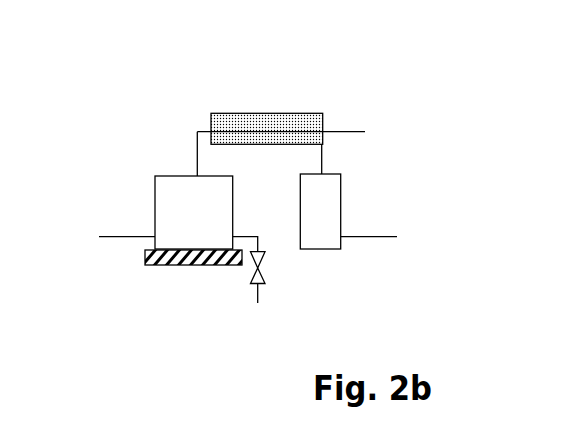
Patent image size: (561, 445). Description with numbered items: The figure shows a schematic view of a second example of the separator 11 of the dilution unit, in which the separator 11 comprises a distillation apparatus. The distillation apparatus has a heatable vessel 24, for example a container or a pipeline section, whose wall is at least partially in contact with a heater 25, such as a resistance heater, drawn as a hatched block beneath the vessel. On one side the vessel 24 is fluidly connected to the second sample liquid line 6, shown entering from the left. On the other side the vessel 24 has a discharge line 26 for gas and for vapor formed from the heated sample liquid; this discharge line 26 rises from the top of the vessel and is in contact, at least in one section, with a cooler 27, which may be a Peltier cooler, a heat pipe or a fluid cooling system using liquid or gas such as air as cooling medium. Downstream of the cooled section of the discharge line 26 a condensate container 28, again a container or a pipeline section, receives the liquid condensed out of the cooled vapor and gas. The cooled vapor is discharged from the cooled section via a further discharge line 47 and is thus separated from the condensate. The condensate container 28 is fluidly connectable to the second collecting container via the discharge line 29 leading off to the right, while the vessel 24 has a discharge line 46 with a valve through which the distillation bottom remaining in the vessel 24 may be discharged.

The separator 11 is at (158, 109).
The cooler 27 is at (260, 113).
The discharge line 47 is at (333, 131).
The discharge line 26 is at (197, 163).
The heatable vessel 24 is at (167, 212).
The heater 25 is at (200, 263).
The condensate container 28 is at (328, 195).
The discharge line 29 is at (363, 238).
The second sample liquid line 6 is at (119, 237).
The discharge line 46 is at (262, 295).